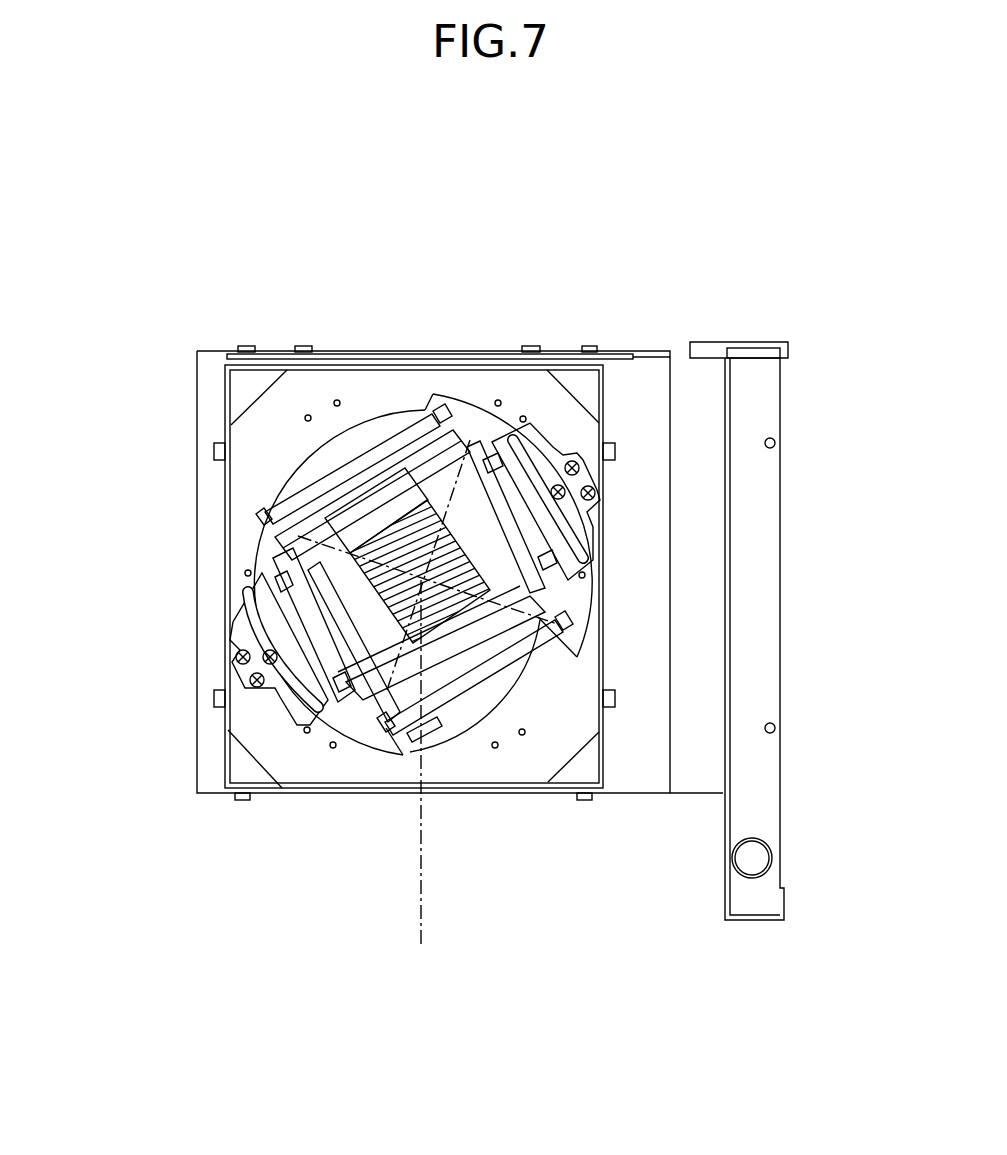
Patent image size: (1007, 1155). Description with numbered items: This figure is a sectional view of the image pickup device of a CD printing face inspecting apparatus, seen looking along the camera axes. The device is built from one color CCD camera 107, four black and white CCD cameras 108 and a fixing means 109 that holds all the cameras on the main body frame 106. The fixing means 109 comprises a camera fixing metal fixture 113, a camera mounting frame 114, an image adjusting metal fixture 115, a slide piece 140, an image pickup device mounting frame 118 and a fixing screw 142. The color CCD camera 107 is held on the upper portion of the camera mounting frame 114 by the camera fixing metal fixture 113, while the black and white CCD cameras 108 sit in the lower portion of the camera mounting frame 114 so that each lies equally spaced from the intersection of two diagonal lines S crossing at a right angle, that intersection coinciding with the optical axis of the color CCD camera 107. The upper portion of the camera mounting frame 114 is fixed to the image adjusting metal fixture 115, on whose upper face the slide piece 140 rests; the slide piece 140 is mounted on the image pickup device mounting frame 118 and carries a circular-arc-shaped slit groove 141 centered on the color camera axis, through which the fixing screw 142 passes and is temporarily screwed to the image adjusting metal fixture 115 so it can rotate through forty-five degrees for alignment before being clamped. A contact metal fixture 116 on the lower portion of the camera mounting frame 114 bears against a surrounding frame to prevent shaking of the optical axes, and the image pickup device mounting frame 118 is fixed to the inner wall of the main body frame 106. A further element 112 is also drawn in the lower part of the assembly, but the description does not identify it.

The main body frame 106 is at (427, 356).
The color CCD camera 107 is at (440, 610).
The black and white CCD camera 108 is at (375, 657).
The fixing means 109 is at (533, 413).
The lower bar 112 is at (528, 718).
The camera fixing metal fixture 113 is at (352, 487).
The camera mounting frame 114 is at (267, 490).
The image adjusting metal fixture 115 is at (257, 540).
The contact metal fixture 116 is at (367, 437).
The image pickup device mounting frame 118 is at (577, 720).
The slide piece 140 is at (502, 447).
The circular-arc-shaped slit groove 141 is at (533, 457).
The fixing screw 142 is at (558, 490).
The diagonal line S is at (420, 918).